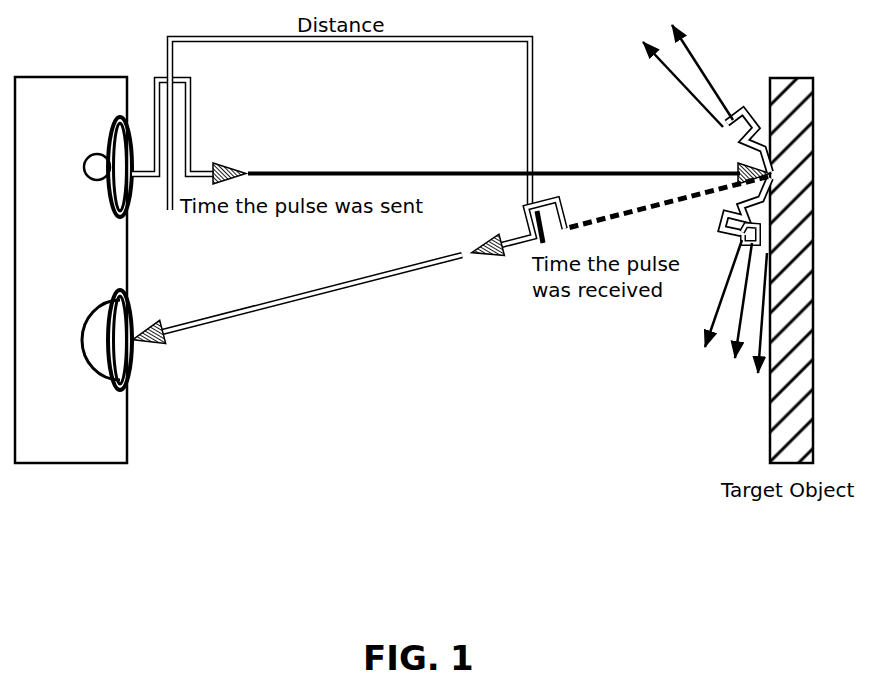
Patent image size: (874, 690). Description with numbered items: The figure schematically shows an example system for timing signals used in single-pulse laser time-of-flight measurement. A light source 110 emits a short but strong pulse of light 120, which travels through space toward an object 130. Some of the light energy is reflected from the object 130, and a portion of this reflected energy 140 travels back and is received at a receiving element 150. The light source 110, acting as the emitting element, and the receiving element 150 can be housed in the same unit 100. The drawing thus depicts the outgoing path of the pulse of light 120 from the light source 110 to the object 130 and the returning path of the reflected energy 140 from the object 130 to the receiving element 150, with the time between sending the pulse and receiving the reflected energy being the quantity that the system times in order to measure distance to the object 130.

The unit 100 is at (157, 528).
The light source 110 is at (131, 137).
The pulse of light 120 is at (190, 99).
The object 130 is at (787, 77).
The reflected energy 140 is at (513, 218).
The receiving element 150 is at (128, 364).